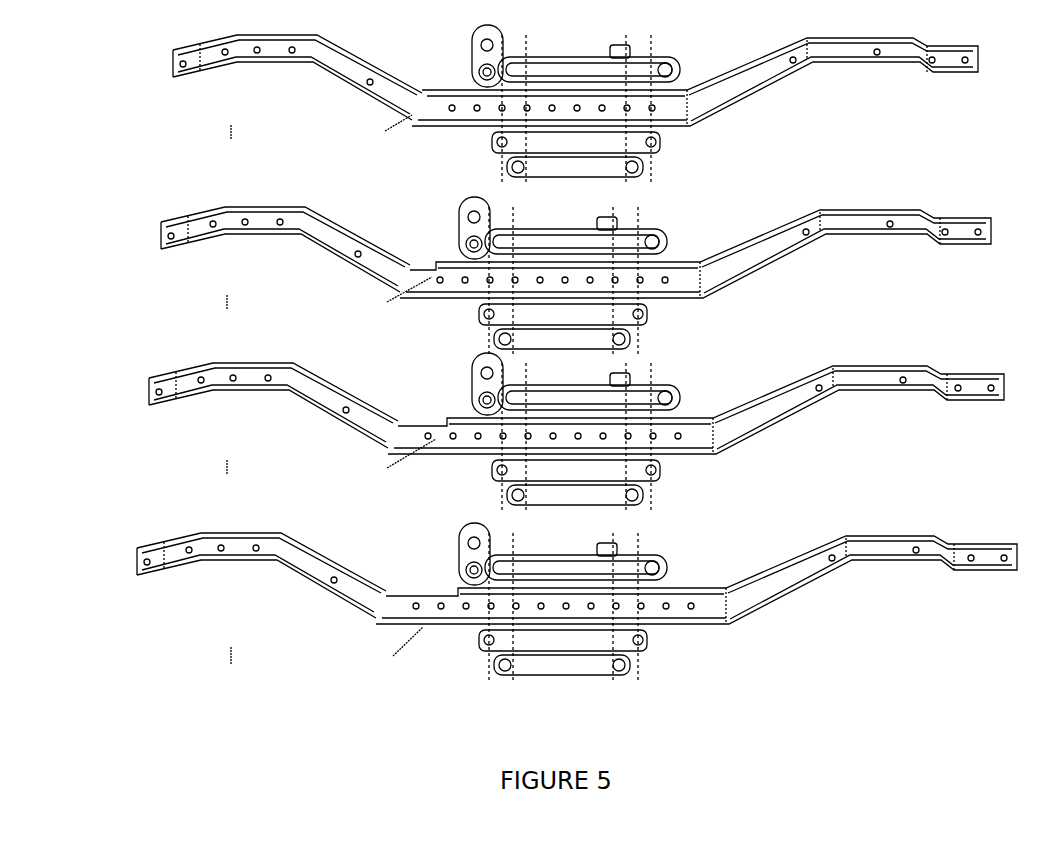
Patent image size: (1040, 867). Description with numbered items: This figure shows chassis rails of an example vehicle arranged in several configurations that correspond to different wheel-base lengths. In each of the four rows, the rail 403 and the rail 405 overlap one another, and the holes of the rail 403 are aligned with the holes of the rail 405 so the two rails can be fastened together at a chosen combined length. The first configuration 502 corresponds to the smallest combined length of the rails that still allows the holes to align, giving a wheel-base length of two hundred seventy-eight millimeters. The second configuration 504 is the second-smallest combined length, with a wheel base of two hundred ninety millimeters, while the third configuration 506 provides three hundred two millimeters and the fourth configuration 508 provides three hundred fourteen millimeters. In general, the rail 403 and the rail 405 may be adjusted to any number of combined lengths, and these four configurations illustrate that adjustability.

The rail 403 is at (280, 46).
The rail 405 is at (703, 96).
The first configuration 502 is at (146, 65).
The second configuration 504 is at (148, 237).
The third configuration 506 is at (133, 388).
The fourth configuration 508 is at (122, 553).